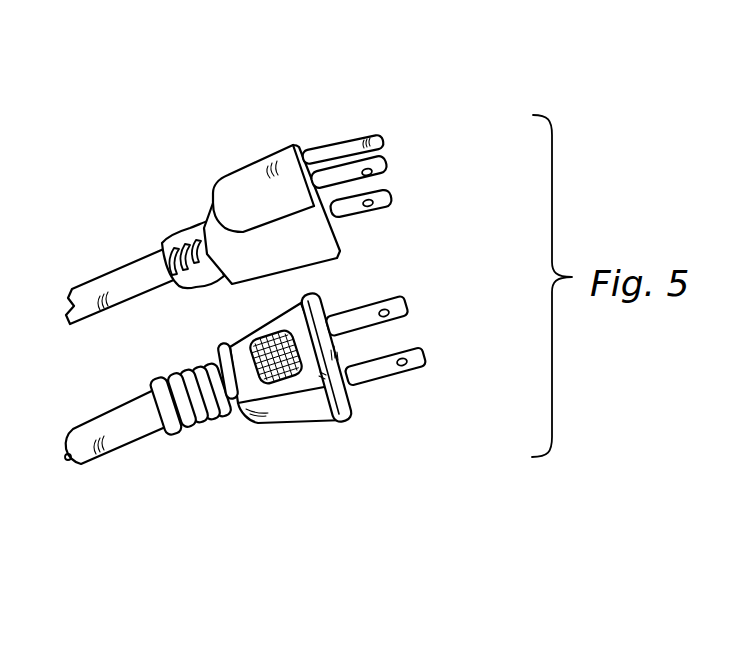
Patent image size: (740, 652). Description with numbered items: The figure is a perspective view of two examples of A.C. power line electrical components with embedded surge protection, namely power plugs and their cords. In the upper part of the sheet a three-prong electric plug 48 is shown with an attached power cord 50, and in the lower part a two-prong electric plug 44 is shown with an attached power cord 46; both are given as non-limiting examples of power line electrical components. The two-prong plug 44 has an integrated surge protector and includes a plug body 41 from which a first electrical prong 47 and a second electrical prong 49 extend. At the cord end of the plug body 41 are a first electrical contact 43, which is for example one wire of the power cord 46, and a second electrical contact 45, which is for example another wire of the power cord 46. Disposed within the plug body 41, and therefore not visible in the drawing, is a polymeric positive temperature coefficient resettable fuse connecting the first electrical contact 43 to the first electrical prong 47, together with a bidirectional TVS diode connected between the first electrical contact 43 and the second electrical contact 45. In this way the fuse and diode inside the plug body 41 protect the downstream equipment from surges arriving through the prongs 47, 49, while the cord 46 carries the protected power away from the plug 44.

The three-prong electric plug 48 is at (290, 72).
The power cord 50 is at (127, 267).
The two-prong electric plug 44 is at (312, 480).
The plug body 41 is at (257, 341).
The second electrical prong 49 is at (358, 313).
The first electrical prong 47 is at (367, 371).
The second electrical contact 45 is at (70, 433).
The power cord 46 is at (155, 423).
The first electrical contact 43 is at (63, 458).